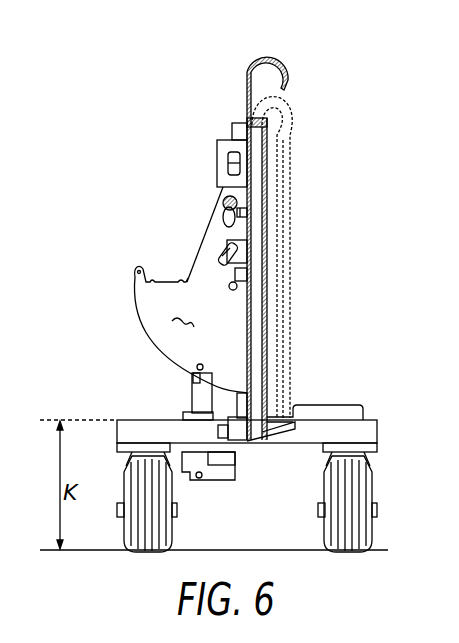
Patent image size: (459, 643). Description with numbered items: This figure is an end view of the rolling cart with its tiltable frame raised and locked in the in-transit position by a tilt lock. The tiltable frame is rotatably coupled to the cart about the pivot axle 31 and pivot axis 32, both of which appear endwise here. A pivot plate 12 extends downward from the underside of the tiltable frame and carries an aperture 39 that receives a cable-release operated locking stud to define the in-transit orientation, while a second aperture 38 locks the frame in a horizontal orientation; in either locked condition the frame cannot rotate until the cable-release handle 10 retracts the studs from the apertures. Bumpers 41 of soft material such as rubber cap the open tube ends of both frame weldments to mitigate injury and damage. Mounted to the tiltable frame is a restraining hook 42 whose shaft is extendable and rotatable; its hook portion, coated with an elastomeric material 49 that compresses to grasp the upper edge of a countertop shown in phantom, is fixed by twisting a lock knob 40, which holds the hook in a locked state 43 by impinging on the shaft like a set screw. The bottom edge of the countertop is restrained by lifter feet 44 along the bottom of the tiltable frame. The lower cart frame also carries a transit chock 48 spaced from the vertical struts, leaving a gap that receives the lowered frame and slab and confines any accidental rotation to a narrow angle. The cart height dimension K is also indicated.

The cable-release handle 10 is at (219, 257).
The pivot plate 12 is at (177, 329).
The pivot axle 31 is at (307, 270).
The pivot axis 32 is at (245, 285).
The second aperture 38 is at (133, 266).
The aperture 39 is at (195, 372).
The lock knob 40 is at (214, 204).
The bumpers 41 is at (251, 394).
The restraining hook 42 is at (243, 92).
The locked state 43 is at (290, 110).
The lifter feet 44 is at (281, 446).
The transit chock 48 is at (320, 402).
The elastomeric material 49 is at (246, 48).